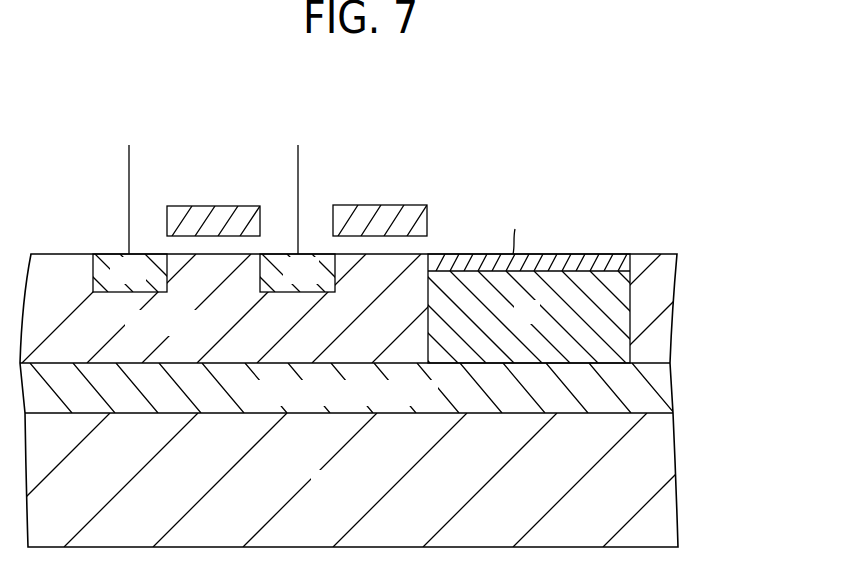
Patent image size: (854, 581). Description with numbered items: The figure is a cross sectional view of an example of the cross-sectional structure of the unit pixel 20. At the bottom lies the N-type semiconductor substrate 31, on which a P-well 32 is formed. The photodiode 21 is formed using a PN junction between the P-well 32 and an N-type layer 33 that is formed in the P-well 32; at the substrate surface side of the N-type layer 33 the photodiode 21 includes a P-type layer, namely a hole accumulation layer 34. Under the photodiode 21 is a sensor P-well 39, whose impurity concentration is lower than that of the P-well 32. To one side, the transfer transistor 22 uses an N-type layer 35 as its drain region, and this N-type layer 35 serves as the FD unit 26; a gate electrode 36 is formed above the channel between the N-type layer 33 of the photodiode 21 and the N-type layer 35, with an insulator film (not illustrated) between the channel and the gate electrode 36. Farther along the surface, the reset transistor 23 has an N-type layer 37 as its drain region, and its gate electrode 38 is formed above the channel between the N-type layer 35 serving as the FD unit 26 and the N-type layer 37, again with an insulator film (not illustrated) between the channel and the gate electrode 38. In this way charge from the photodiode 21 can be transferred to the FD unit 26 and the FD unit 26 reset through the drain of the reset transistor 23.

The unit pixel 20 is at (370, 307).
The photodiode 21 is at (539, 265).
The transfer transistor 22 is at (422, 190).
The reset transistor 23 is at (161, 225).
The FD unit 26 is at (293, 239).
The N-type semiconductor substrate 31 is at (663, 457).
The P-well 32 is at (663, 276).
The N-type layer 33 is at (623, 312).
The hole accumulation layer 34 is at (615, 260).
The N-type layer 35 is at (276, 254).
The gate electrode 36 is at (415, 205).
The N-type layer 37 is at (97, 254).
The gate electrode 38 is at (250, 206).
The sensor P-well 39 is at (663, 394).